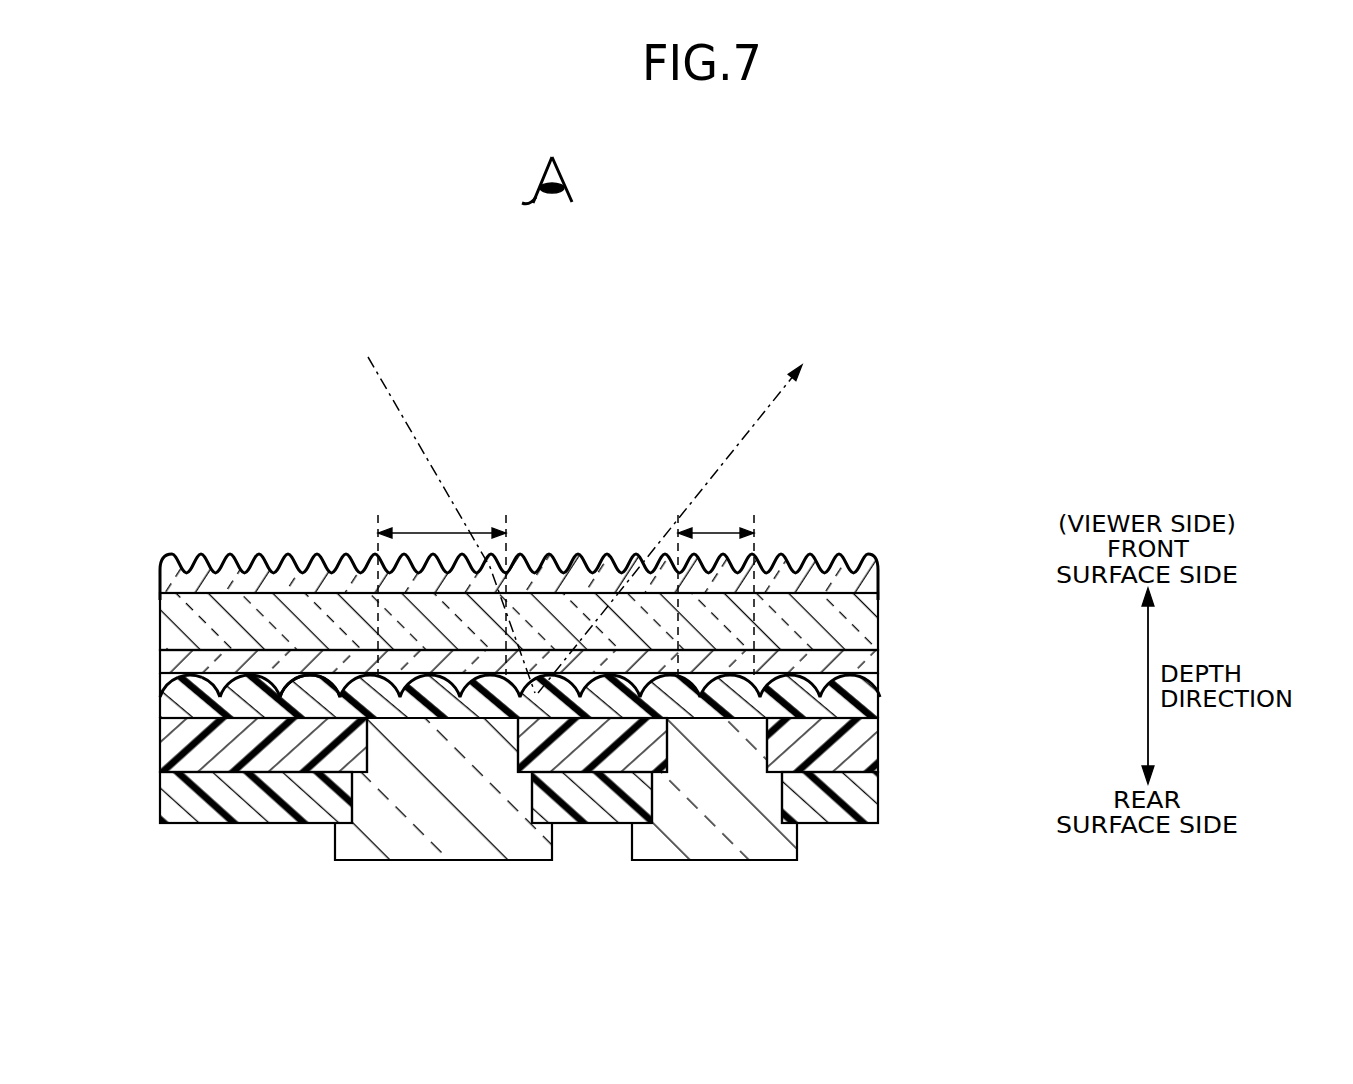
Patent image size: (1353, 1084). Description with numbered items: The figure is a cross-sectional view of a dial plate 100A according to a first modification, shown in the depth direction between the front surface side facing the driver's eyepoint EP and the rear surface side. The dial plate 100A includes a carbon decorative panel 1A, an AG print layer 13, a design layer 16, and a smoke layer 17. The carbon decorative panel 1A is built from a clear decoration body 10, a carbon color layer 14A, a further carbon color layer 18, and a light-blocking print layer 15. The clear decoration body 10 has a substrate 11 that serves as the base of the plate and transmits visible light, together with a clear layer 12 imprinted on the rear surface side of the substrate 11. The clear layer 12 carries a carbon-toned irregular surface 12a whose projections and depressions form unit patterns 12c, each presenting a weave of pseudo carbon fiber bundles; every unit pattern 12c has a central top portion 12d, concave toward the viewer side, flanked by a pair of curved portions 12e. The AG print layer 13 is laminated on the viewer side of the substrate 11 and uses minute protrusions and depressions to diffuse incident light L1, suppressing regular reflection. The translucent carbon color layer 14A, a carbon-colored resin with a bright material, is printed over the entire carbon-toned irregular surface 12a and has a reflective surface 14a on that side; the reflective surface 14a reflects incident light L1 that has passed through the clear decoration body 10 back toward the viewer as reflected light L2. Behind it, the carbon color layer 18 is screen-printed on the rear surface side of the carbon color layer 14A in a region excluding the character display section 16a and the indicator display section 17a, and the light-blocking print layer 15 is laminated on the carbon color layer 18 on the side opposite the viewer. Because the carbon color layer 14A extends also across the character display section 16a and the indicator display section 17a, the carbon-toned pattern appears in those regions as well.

The carbon decorative panel 1A is at (1025, 630).
The clear decoration body 10 is at (943, 600).
The substrate 11 is at (878, 616).
The clear layer 12 is at (878, 668).
The carbon-toned irregular surface 12a is at (318, 695).
The unit pattern 12c is at (278, 890).
The top portion 12d is at (188, 680).
The curved portions 12e is at (166, 689).
The AG print layer 13 is at (878, 572).
The carbon color layer 14A is at (878, 706).
The reflective surface 14a is at (256, 664).
The light-blocking print layer 15 is at (878, 796).
The design layer 16 is at (441, 862).
The character display section 16a is at (410, 525).
The smoke layer 17 is at (714, 862).
The indicator display section 17a is at (737, 525).
The carbon color layer 18 is at (878, 748).
The dial plate 100A is at (863, 423).
The eyepoint EP is at (558, 167).
The incident light L1 is at (395, 400).
The reflected light L2 is at (752, 424).